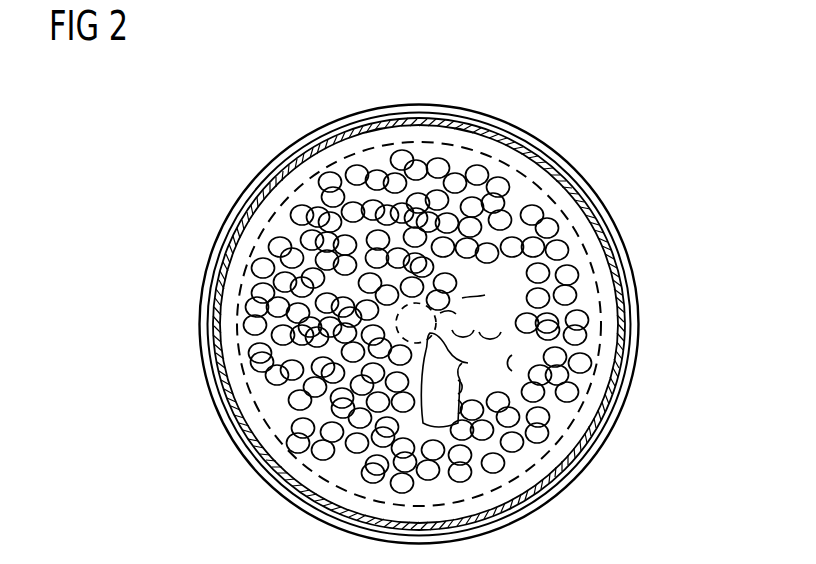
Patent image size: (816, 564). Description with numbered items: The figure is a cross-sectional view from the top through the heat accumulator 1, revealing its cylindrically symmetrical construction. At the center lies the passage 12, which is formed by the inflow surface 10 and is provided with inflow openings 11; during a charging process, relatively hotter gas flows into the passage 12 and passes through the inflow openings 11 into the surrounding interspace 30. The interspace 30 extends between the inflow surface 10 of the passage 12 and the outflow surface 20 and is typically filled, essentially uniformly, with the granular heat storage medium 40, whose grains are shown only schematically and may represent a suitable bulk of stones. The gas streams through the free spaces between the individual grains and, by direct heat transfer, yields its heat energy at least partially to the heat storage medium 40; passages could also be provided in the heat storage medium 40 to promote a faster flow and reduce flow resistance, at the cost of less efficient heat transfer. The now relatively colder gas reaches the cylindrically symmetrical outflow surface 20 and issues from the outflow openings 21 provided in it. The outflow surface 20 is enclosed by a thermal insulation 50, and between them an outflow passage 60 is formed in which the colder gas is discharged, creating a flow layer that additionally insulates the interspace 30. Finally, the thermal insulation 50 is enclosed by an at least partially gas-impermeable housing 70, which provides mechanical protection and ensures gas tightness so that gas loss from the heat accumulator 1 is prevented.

The heat accumulator 1 is at (708, 68).
The inflow surface 10 is at (468, 363).
The inflow openings 11 is at (437, 318).
The passage 12 is at (440, 388).
The outflow surface 20 is at (590, 242).
The outflow openings 21 is at (593, 290).
The interspace 30 is at (565, 408).
The heat storage medium 40 is at (580, 363).
The thermal insulation 50 is at (557, 148).
The outflow passage 60 is at (573, 217).
The housing 70 is at (637, 333).